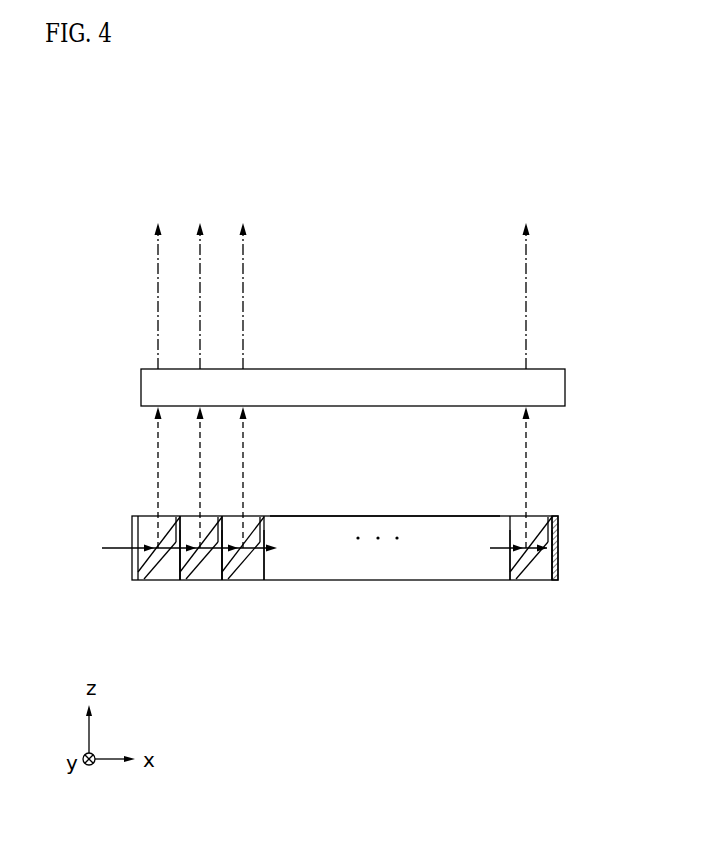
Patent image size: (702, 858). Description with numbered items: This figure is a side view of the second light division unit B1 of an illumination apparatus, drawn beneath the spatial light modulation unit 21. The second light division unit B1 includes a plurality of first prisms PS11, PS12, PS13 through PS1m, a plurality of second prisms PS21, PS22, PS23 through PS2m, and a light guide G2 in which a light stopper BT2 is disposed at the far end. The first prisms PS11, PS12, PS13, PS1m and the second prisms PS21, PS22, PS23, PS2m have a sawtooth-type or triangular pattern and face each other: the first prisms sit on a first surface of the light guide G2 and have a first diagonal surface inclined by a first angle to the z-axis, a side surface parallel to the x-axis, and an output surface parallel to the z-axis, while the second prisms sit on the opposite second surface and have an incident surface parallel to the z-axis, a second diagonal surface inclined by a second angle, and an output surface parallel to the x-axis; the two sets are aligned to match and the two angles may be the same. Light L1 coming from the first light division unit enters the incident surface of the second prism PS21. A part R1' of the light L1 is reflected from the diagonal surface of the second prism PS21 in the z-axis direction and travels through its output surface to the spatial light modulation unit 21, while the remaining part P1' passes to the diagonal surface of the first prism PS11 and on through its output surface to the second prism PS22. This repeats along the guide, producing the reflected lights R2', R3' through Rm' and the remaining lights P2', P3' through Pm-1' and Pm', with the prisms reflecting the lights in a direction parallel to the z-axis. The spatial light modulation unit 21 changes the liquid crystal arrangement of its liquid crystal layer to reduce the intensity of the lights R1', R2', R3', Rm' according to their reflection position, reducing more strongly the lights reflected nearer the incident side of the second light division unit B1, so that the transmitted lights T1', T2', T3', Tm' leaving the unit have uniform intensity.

The spatial light modulation unit 21 is at (574, 378).
The second light division unit B1 is at (341, 596).
The light guide G2 is at (405, 580).
The incident light L1 is at (107, 525).
The light stopper BT2 is at (558, 518).
The light passing through the spatial light modulation unit T1' is at (138, 296).
The light passing through the spatial light modulation unit T2' is at (182, 296).
The light passing through the spatial light modulation unit T3' is at (261, 296).
The light passing through the spatial light modulation unit Tm' is at (553, 296).
The reflected light R1' is at (140, 477).
The reflected light R2' is at (183, 477).
The reflected light R3' is at (225, 477).
The reflected light Rm' is at (550, 477).
The second prism PS21 is at (148, 518).
The second prism PS22 is at (193, 518).
The second prism PS23 is at (258, 518).
The second prism PS2m is at (518, 517).
The first prism PS11 is at (150, 578).
The first prism PS12 is at (202, 578).
The first prism PS13 is at (257, 578).
The first prism PS1m is at (523, 573).
The remaining part of incident light P1' is at (171, 580).
The remaining part of incident light P2' is at (221, 572).
The remaining part of incident light P3' is at (284, 580).
The remaining part of incident light Pm-1' is at (481, 601).
The remaining part of incident light Pm' is at (562, 601).